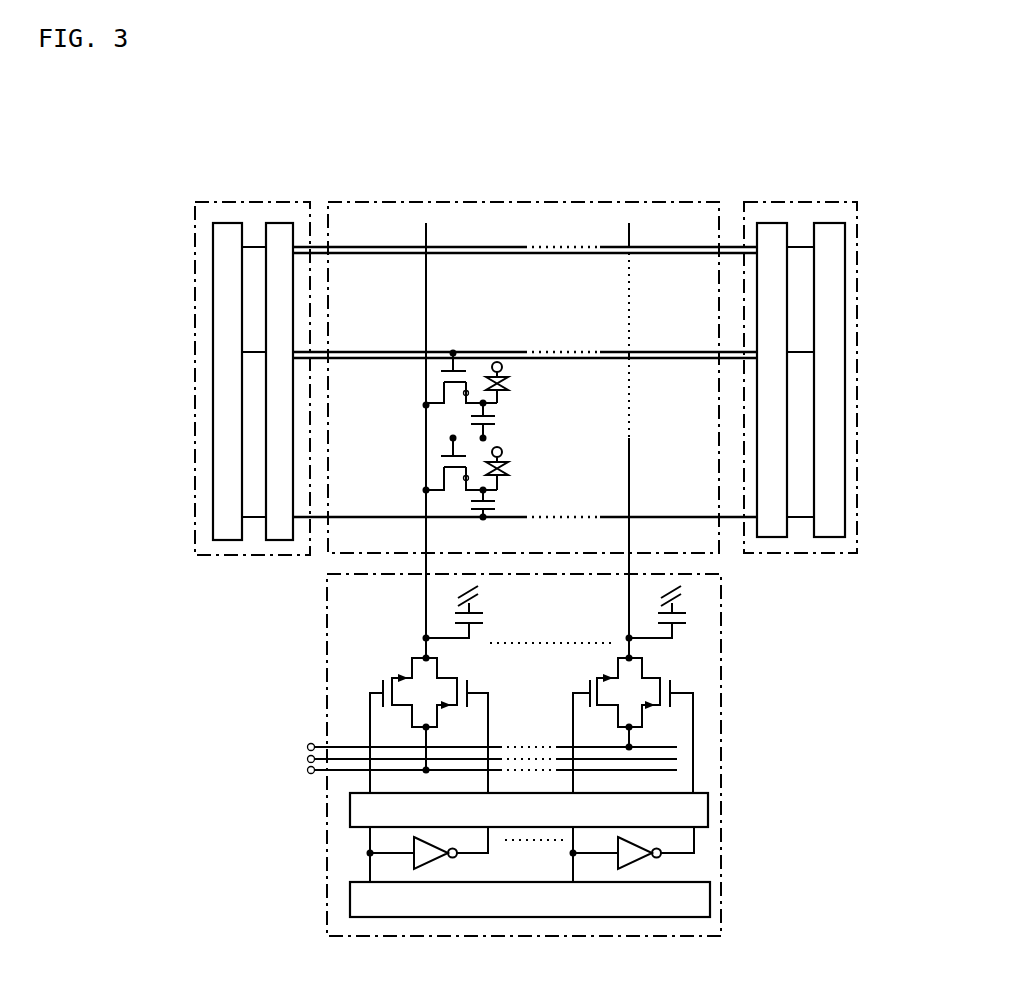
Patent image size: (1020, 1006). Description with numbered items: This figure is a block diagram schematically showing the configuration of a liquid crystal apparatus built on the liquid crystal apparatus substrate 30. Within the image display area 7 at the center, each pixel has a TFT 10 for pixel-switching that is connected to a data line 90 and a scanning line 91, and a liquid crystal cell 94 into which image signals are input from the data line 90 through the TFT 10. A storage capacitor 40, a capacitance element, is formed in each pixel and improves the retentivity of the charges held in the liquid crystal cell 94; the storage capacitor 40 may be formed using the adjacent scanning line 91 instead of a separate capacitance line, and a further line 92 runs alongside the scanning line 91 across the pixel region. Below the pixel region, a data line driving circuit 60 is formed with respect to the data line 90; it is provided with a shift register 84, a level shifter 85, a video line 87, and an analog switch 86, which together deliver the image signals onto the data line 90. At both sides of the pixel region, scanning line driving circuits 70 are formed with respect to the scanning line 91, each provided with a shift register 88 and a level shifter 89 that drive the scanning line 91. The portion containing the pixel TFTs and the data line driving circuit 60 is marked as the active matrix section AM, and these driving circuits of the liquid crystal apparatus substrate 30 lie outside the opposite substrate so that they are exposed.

The liquid crystal apparatus substrate 30 is at (630, 126).
The image display area 7 is at (470, 202).
The TFT for pixel-switching 10 is at (456, 360).
The storage capacitor 40 is at (503, 420).
The liquid crystal cell 94 is at (500, 372).
The scanning line driving circuit 70 is at (262, 203).
The shift register 88 is at (226, 540).
The level shifter 89 is at (279, 232).
The data line 90 is at (426, 232).
The scanning line 91 is at (697, 443).
The power supply line 92 is at (672, 440).
The data line driving circuit 60 is at (596, 936).
The analog switch 86 is at (405, 679).
The video line 87 is at (300, 778).
The level shifter 85 is at (350, 806).
The shift register 84 is at (350, 896).
The active matrix portion AM is at (827, 933).